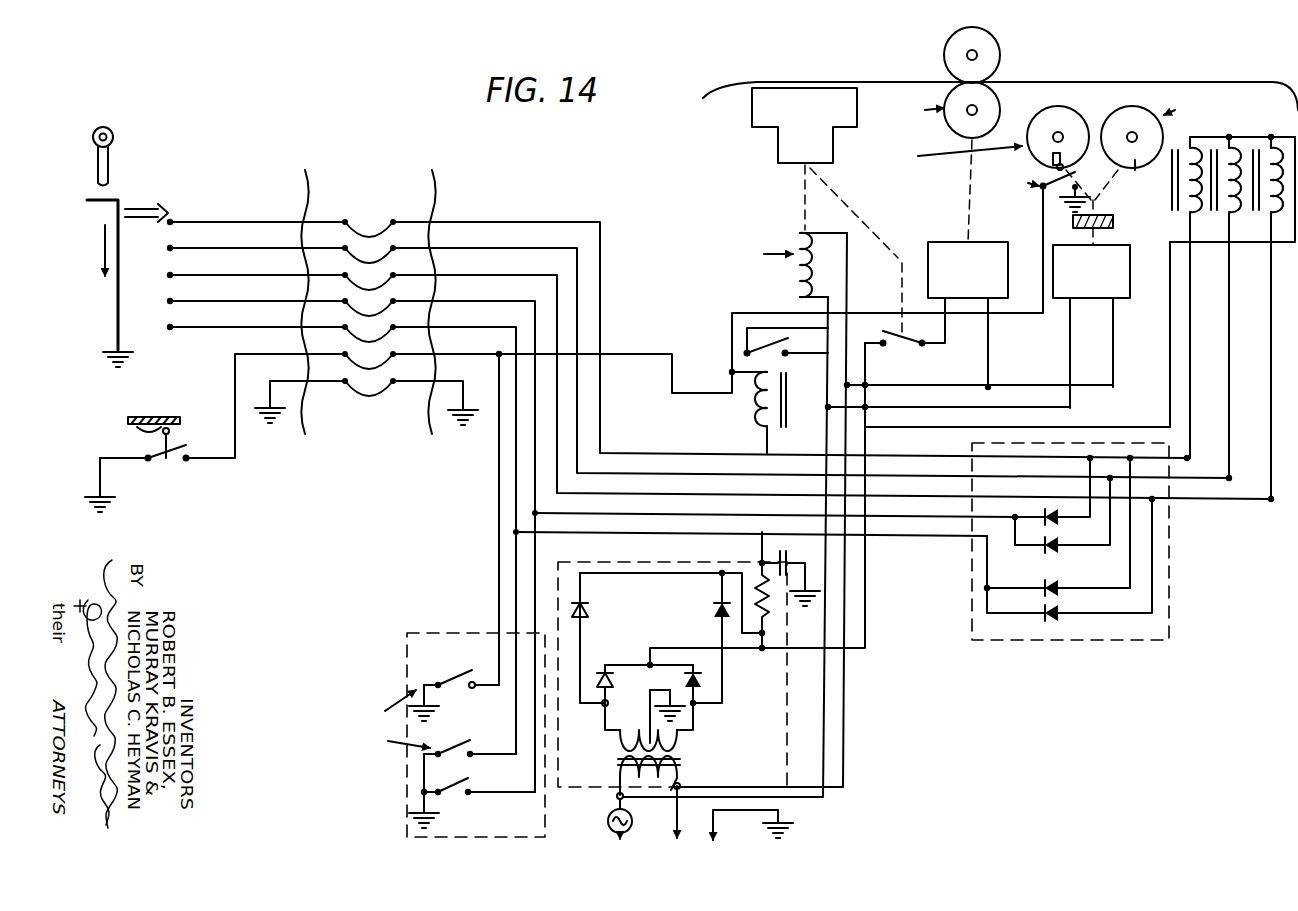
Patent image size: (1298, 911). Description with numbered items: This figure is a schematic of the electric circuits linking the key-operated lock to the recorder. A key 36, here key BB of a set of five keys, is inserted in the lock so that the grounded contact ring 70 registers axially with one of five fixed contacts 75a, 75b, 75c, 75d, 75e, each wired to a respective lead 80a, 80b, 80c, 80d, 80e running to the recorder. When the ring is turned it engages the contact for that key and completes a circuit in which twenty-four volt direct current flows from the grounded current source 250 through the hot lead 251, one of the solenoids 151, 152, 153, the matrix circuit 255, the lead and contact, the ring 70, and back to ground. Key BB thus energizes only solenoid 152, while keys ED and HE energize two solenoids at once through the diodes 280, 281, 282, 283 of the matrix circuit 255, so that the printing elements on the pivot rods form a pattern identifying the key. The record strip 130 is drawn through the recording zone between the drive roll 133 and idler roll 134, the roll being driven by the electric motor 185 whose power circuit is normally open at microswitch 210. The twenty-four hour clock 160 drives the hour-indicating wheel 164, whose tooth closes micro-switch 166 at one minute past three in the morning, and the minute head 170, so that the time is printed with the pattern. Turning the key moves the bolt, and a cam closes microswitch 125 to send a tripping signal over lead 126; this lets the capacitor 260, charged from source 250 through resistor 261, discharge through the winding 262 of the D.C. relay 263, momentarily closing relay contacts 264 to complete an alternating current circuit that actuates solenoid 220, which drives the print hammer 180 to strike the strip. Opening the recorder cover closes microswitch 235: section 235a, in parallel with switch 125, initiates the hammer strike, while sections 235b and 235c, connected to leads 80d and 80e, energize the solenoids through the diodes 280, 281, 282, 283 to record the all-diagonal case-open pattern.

The key 36 is at (152, 147).
The contact ring 70 is at (163, 206).
The fixed contact 75a is at (168, 223).
The fixed contact 75b is at (168, 248).
The fixed contact 75c is at (168, 275).
The fixed contact 75d is at (168, 300).
The fixed contact 75e is at (168, 326).
The lead 80a is at (240, 222).
The lead 80b is at (240, 248).
The lead 80c is at (240, 275).
The lead 80d is at (240, 301).
The lead 80e is at (240, 327).
The microswitch 125 is at (199, 441).
The lead 126 is at (222, 461).
The record strip 130 is at (1093, 83).
The drive roll 133 is at (993, 107).
The idler roll 134 is at (993, 53).
The solenoid 151 is at (1186, 214).
The solenoid 152 is at (1220, 306).
The solenoid 153 is at (1263, 316).
The 24 hour clock 160 is at (1131, 300).
The hour-indicating wheel 164 is at (1068, 113).
The micro-switch 166 is at (1058, 203).
The head 170 is at (1169, 145).
The print hammer 180 is at (778, 148).
The electric motor 185 is at (938, 242).
The microswitch 210 is at (918, 334).
The solenoid 220 is at (795, 245).
The microswitch 235 is at (430, 735).
The switch section 235a is at (450, 676).
The switch section 235b is at (452, 797).
The switch section 235c is at (452, 743).
The current source 250 is at (591, 788).
The hot lead 251 is at (1284, 137).
The matrix circuit 255 is at (1070, 561).
The capacitor 260 is at (775, 598).
The resistor 261 is at (754, 572).
The winding 262 is at (760, 414).
The D.C. relay 263 is at (796, 404).
The relay contacts 264 is at (790, 346).
The diode 280 is at (1059, 523).
The diode 281 is at (1054, 551).
The diode 282 is at (1056, 595).
The diode 283 is at (1028, 658).